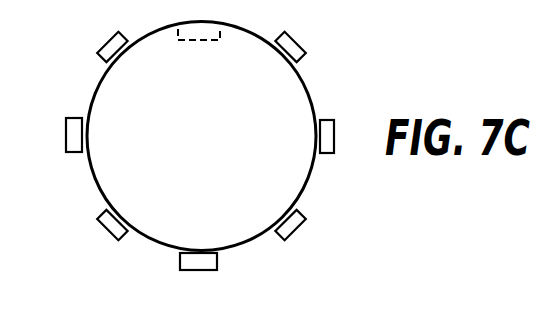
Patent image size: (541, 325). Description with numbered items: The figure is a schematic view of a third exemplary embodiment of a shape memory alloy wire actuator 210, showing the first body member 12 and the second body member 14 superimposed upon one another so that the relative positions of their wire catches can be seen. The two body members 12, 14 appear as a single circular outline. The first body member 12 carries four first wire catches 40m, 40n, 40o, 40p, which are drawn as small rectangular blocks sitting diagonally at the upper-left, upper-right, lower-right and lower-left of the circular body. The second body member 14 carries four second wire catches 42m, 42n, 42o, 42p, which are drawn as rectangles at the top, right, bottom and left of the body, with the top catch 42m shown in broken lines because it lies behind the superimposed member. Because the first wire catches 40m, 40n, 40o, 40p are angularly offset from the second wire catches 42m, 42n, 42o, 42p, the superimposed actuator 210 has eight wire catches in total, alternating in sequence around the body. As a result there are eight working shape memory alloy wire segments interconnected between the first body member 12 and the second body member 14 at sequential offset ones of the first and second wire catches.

The shape memory alloy wire actuator 210 is at (231, 146).
The first body member 12 is at (168, 136).
The second body member 14 is at (97, 181).
The first wire catch 40m is at (98, 51).
The first wire catch 40n is at (305, 50).
The first wire catch 40o is at (303, 226).
The first wire catch 40p is at (100, 227).
The second wire catch 42m is at (213, 42).
The second wire catch 42n is at (352, 107).
The second wire catch 42o is at (198, 254).
The second wire catch 42p is at (72, 118).